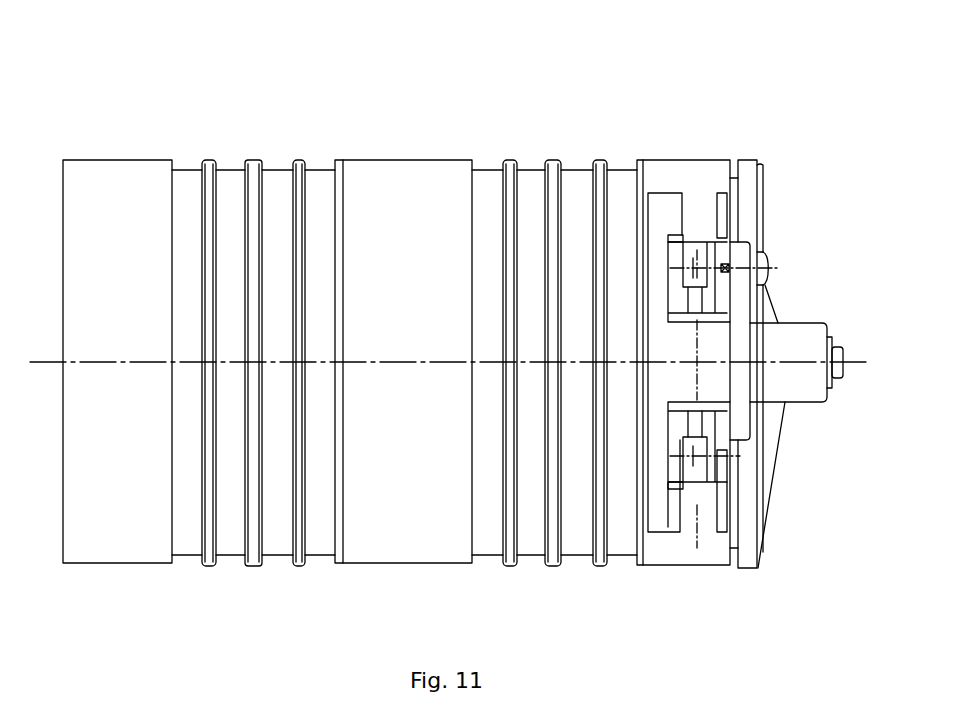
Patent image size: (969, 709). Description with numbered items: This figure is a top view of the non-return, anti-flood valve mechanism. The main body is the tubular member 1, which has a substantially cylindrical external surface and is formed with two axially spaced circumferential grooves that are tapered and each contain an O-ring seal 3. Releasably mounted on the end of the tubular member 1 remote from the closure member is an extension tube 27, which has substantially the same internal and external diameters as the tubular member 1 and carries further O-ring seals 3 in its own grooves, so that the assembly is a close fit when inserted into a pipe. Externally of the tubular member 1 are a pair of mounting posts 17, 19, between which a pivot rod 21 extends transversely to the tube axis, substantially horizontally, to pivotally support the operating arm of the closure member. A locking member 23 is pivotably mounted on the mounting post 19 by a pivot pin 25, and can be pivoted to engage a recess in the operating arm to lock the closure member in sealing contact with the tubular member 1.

The tubular member 1 is at (558, 160).
The O-ring seal 3 is at (207, 160).
The extension tube 27 is at (255, 160).
The mounting post 19 is at (672, 253).
The pivot pin 25 is at (765, 258).
The locking member 23 is at (735, 317).
The mounting post 17 is at (675, 430).
The pivot rod 21 is at (700, 432).